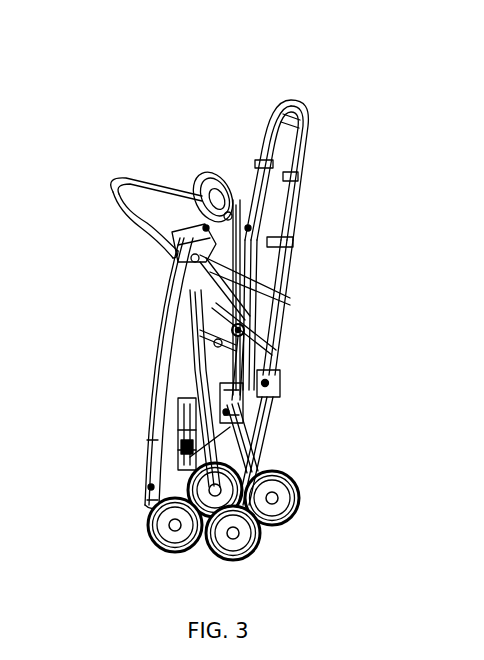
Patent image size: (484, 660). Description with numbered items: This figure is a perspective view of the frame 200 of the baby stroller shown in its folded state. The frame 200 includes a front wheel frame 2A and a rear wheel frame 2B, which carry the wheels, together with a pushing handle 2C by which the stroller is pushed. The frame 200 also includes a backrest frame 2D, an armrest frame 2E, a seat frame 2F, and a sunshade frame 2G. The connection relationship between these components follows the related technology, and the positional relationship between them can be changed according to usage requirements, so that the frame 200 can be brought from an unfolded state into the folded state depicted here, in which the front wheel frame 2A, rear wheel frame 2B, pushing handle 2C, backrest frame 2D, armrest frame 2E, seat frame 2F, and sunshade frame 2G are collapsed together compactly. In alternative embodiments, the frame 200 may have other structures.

The frame 200 is at (213, 60).
The front wheel frame 2A is at (152, 391).
The rear wheel frame 2B is at (192, 432).
The pushing handle 2C is at (298, 190).
The backrest frame 2D is at (214, 340).
The armrest frame 2E is at (128, 192).
The seat frame 2F is at (231, 337).
The sunshade frame 2G is at (218, 174).